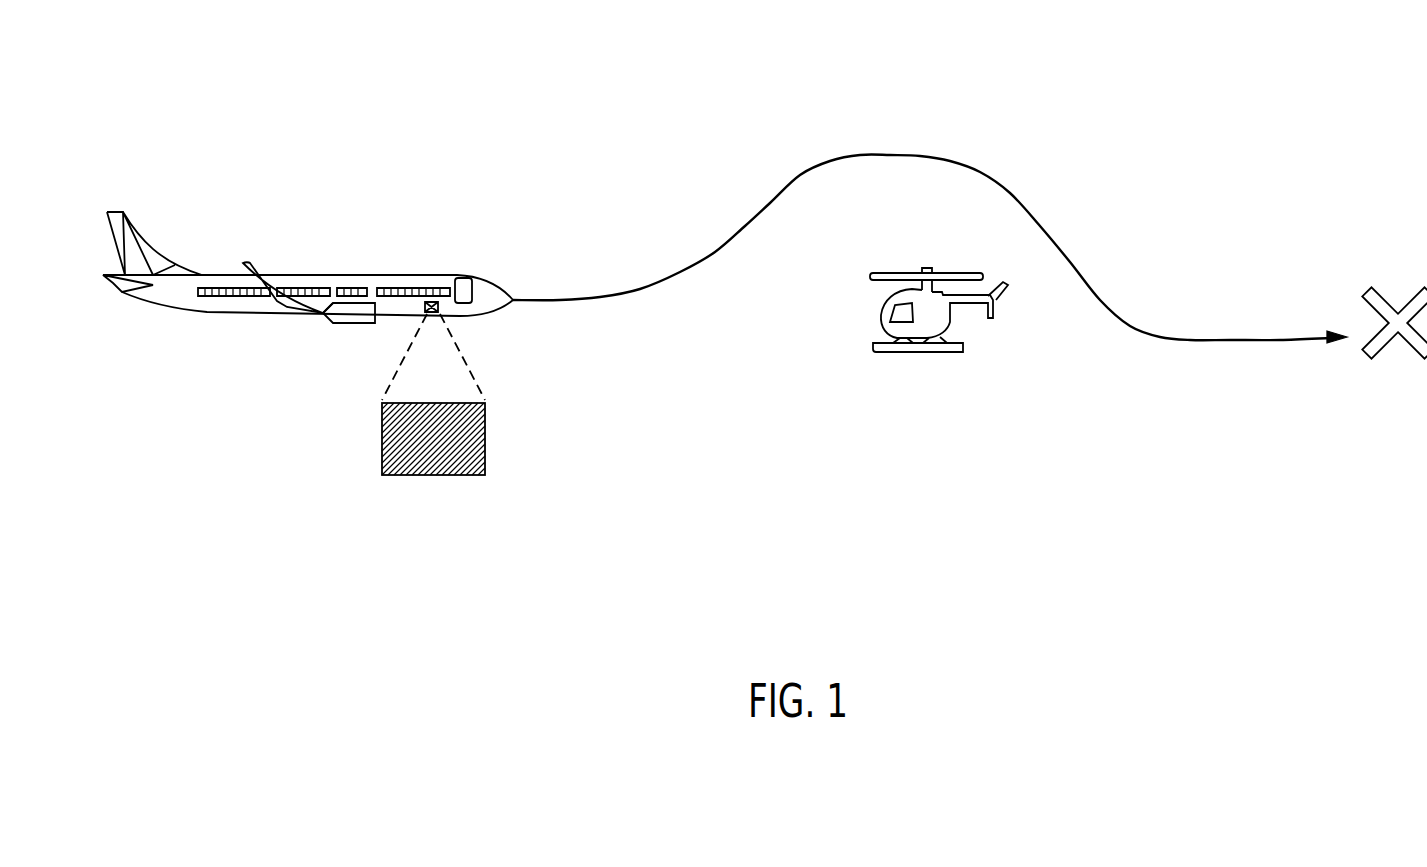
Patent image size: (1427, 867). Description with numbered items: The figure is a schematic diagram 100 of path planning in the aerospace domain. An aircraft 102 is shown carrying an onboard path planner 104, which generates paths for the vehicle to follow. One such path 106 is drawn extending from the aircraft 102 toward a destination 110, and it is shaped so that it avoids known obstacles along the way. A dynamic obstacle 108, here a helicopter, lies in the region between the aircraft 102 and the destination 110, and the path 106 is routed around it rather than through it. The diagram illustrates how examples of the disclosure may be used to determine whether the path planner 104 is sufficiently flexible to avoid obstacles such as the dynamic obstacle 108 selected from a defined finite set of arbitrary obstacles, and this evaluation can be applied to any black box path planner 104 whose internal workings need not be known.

The schematic diagram 100 is at (245, 565).
The aircraft 102 is at (283, 317).
The onboard path planner 104 is at (432, 475).
The path 106 is at (750, 228).
The dynamic obstacle 108 is at (947, 330).
The destination 110 is at (1407, 350).